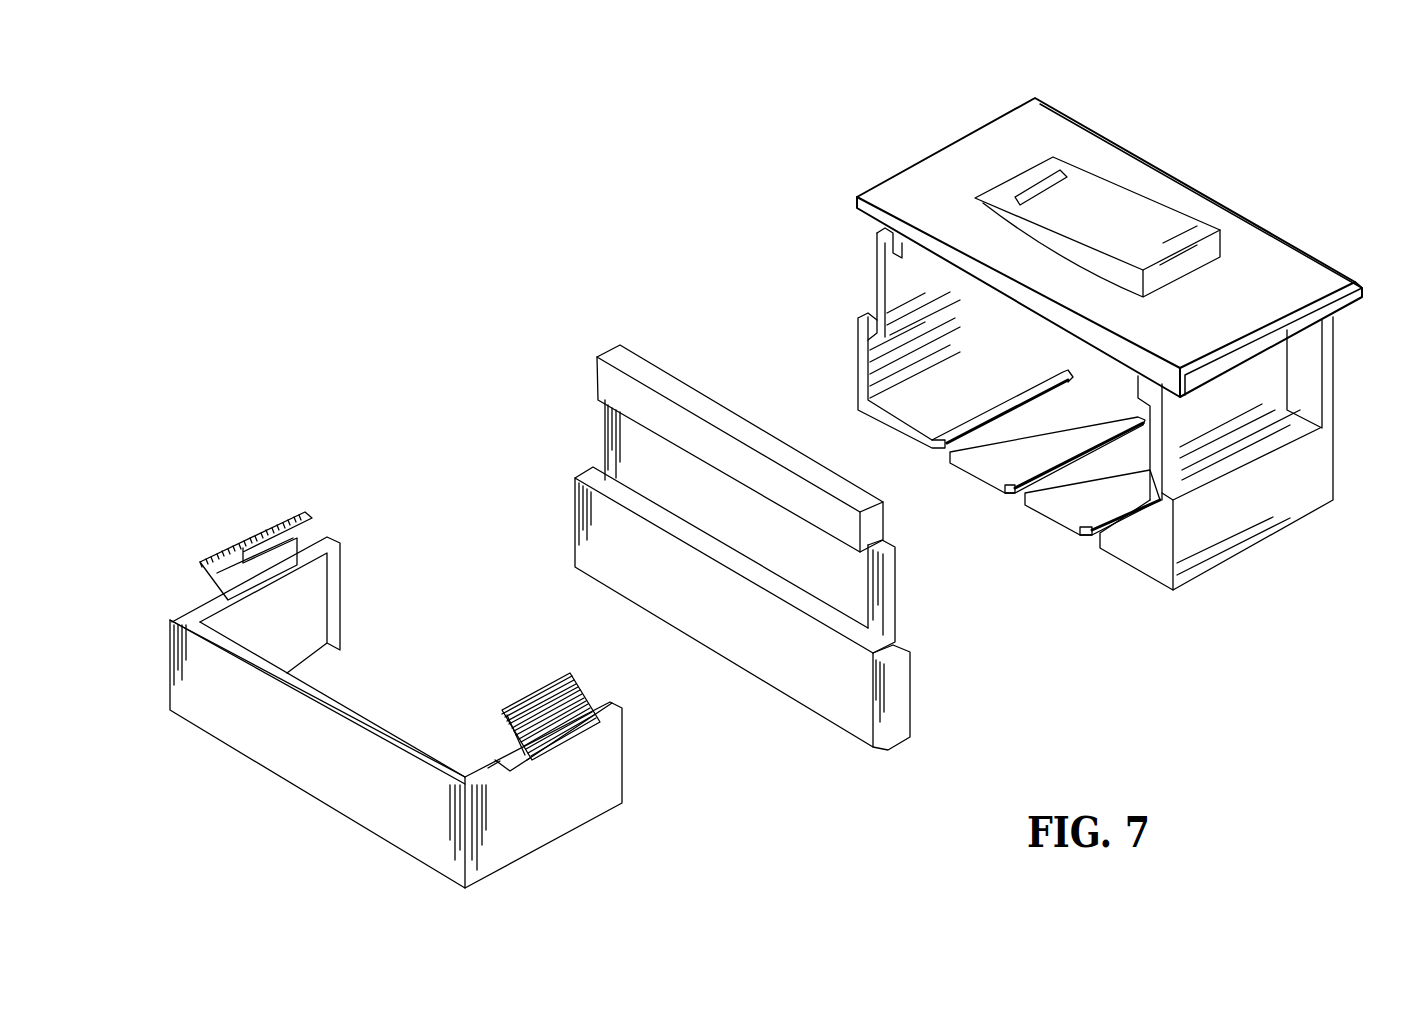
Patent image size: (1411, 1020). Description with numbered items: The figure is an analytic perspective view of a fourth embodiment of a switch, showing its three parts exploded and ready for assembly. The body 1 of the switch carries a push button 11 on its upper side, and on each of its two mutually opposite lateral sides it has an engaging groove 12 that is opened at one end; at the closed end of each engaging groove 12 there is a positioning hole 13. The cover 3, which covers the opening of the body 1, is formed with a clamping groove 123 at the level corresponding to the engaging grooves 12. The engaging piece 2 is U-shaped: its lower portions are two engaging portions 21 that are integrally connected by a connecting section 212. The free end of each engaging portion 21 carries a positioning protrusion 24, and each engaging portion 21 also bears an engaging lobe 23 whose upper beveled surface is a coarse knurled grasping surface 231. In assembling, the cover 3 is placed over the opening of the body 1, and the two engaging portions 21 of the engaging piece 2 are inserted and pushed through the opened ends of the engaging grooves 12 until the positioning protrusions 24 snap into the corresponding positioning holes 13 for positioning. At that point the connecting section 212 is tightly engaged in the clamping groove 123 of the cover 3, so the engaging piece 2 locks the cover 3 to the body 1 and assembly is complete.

The body 1 is at (1132, 354).
The push button 11 is at (1117, 210).
The engaging groove 12 is at (1152, 507).
The positioning hole 13 is at (1307, 372).
The clamping groove 123 is at (857, 577).
The engaging piece 2 is at (446, 658).
The engaging portion 21 is at (497, 845).
The connecting section 212 is at (333, 773).
The engaging lobe 23 is at (527, 763).
The coarse knurled grasping surface 231 is at (545, 687).
The positioning protrusion 24 is at (340, 543).
The cover 3 is at (822, 586).